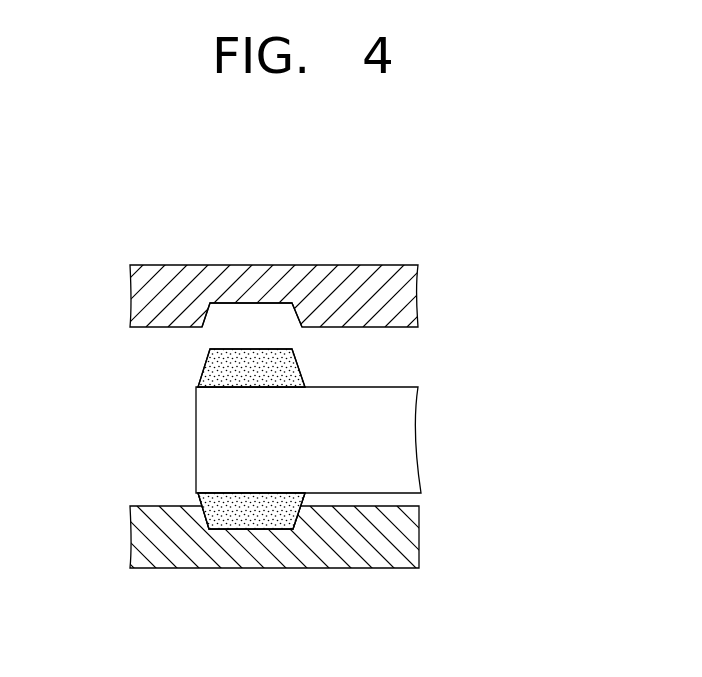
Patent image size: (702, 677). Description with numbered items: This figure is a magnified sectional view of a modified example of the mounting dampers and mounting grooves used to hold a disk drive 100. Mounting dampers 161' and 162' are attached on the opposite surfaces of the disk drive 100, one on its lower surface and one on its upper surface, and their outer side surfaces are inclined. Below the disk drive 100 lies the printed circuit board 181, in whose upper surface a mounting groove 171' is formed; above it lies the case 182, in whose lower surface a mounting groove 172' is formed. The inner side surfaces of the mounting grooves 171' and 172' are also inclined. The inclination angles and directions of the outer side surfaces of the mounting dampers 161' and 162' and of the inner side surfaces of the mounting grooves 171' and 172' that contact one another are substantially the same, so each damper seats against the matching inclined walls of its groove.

The disk drive 100 is at (407, 442).
The mounting damper 161' is at (251, 565).
The mounting damper 162' is at (205, 368).
The mounting groove 171' is at (264, 570).
The mounting groove 172' is at (252, 261).
The printed circuit board 181 is at (156, 560).
The case 182 is at (160, 277).